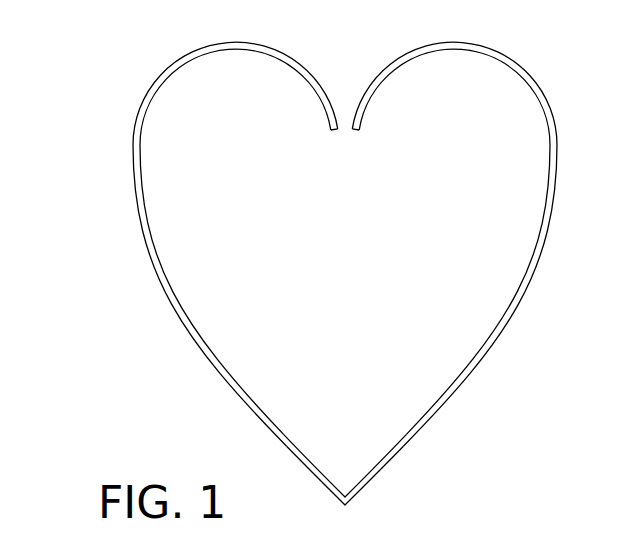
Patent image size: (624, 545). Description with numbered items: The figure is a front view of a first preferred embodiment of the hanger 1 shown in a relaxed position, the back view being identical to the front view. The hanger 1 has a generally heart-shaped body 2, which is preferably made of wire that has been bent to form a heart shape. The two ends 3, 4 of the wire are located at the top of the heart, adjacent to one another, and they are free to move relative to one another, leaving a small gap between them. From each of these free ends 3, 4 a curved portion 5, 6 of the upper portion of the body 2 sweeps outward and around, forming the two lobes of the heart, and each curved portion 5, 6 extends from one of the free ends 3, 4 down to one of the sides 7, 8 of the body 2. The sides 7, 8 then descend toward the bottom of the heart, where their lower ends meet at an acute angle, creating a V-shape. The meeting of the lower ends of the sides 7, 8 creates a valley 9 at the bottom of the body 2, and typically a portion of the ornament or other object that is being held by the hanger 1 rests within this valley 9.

The hanger 1 is at (118, 94).
The heart-shaped body 2 is at (129, 210).
The end of the wire 3 is at (327, 121).
The end of the wire 4 is at (365, 120).
The curved portion 5 is at (280, 50).
The curved portion 6 is at (523, 72).
The side of the body 7 is at (167, 297).
The side of the body 8 is at (517, 312).
The valley 9 is at (352, 469).